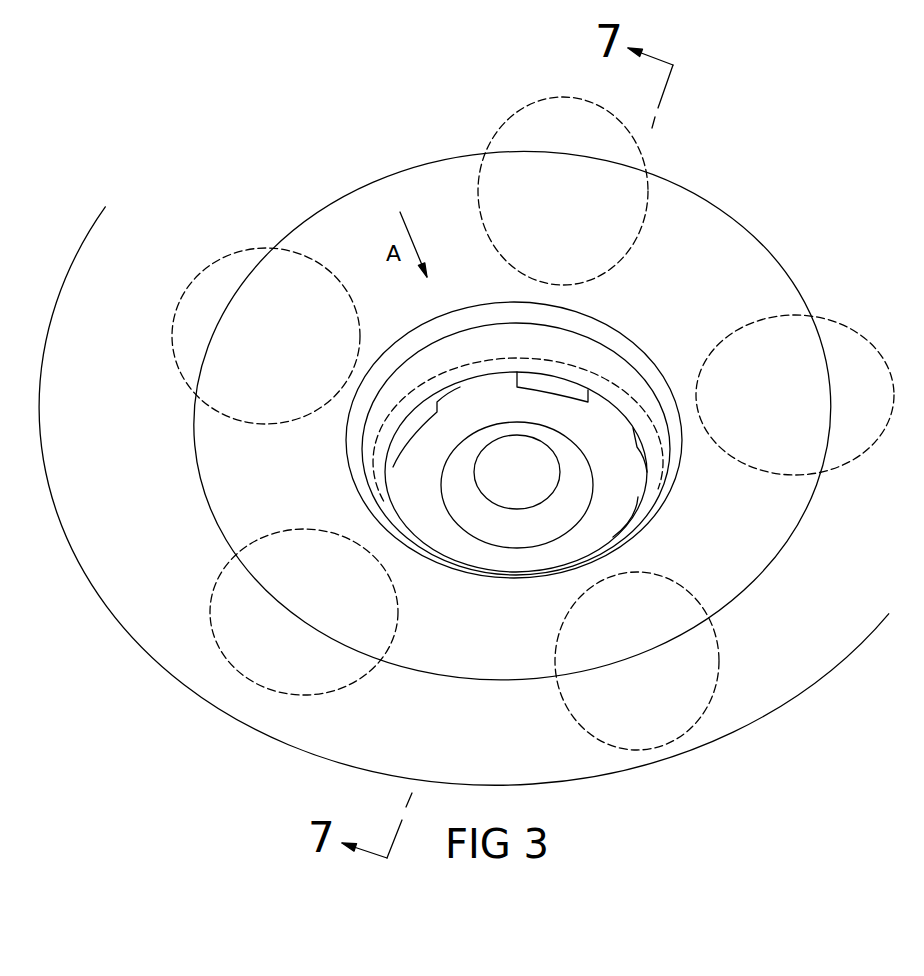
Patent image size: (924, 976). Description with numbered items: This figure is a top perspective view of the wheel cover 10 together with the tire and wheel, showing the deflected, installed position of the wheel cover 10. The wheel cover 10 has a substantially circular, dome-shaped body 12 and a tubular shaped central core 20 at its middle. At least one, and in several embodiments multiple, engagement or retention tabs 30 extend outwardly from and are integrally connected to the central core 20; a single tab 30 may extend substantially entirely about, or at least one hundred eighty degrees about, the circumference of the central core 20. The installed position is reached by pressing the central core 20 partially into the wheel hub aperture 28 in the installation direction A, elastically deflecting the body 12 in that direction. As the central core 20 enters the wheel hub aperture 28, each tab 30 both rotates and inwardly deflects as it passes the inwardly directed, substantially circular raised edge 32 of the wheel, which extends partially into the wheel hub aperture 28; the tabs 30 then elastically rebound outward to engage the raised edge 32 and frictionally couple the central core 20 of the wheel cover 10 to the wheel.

The wheel cover 10 is at (847, 166).
The body 12 is at (657, 233).
The central core 20 is at (633, 428).
The wheel hub aperture 28 is at (638, 504).
The retention tab 30 is at (567, 385).
The raised edge 32 is at (623, 400).